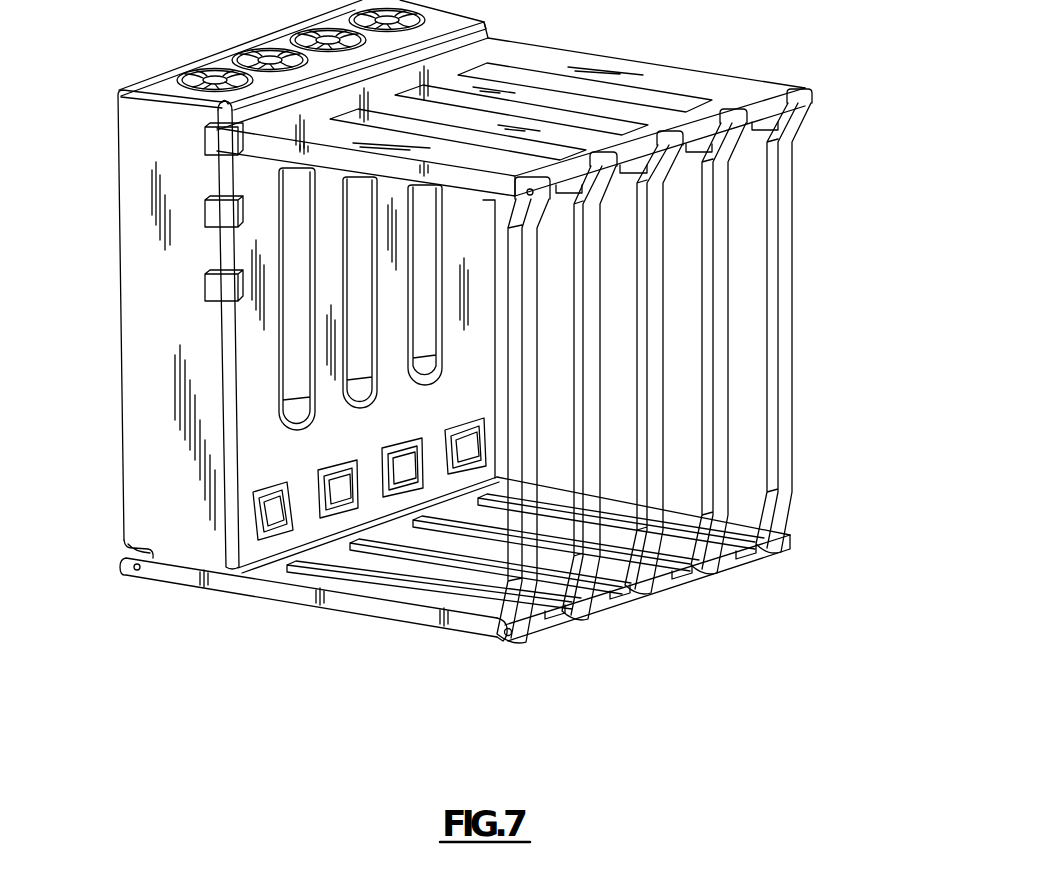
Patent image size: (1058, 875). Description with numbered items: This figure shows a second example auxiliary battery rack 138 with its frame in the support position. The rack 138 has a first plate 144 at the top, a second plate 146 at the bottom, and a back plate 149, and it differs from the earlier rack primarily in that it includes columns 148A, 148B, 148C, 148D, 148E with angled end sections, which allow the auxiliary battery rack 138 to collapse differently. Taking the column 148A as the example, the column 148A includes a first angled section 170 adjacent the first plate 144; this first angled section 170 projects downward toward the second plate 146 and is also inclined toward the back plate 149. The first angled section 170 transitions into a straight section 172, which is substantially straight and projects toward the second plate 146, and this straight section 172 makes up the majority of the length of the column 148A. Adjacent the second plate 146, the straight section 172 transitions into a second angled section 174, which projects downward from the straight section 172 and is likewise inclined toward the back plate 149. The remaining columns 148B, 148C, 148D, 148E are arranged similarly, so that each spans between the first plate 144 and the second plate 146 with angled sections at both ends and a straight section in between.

The auxiliary battery rack 138 is at (331, 659).
The first plate 144 is at (548, 62).
The second plate 146 is at (417, 612).
The column 148A is at (544, 553).
The column 148B is at (608, 536).
The column 148C is at (672, 512).
The column 148D is at (741, 491).
The column 148E is at (800, 468).
The back plate 149 is at (128, 320).
The first angled section 170 is at (520, 207).
The straight section 172 is at (500, 387).
The second angled section 174 is at (488, 642).